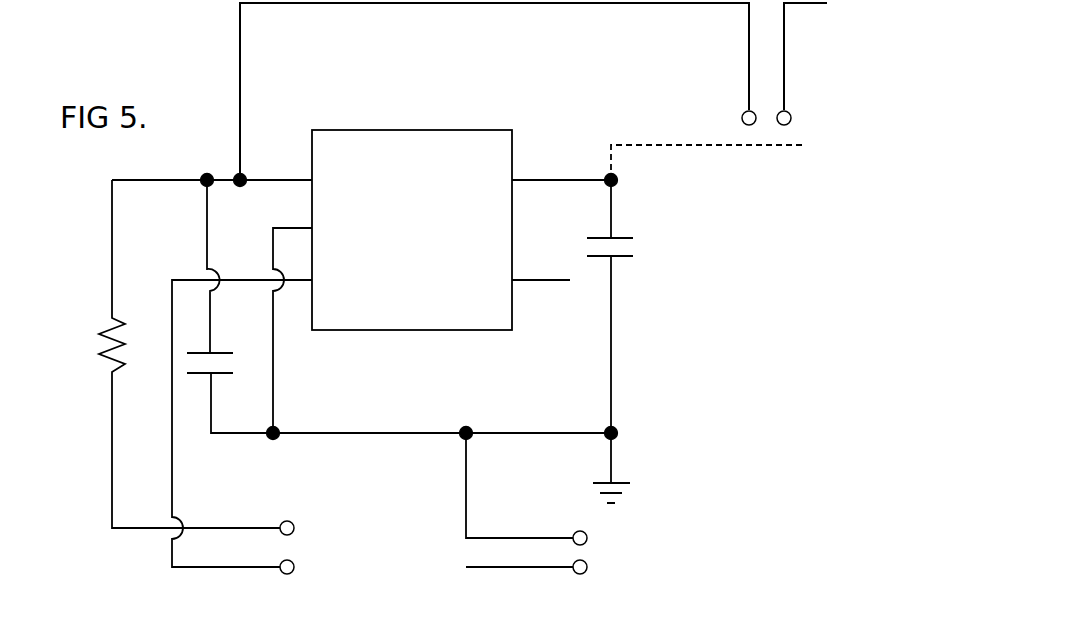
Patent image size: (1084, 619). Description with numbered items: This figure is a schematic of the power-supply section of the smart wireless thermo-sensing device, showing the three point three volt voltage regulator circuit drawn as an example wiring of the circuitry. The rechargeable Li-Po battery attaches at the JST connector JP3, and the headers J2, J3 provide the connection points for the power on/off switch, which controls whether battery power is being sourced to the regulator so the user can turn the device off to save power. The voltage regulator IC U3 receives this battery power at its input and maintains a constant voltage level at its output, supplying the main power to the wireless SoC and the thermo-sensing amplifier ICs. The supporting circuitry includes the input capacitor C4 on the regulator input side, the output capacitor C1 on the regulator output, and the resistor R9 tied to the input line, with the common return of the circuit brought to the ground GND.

The LDO voltage regulator U3 is at (441, 227).
The output capacitor 10uF C1 is at (637, 306).
The input capacitor 10uF C4 is at (230, 306).
The resistor 10k ohm R9 is at (161, 354).
The header J2 is at (299, 547).
The header J3 is at (539, 503).
The JST connector JP3 is at (745, 104).
The ground GND is at (633, 468).